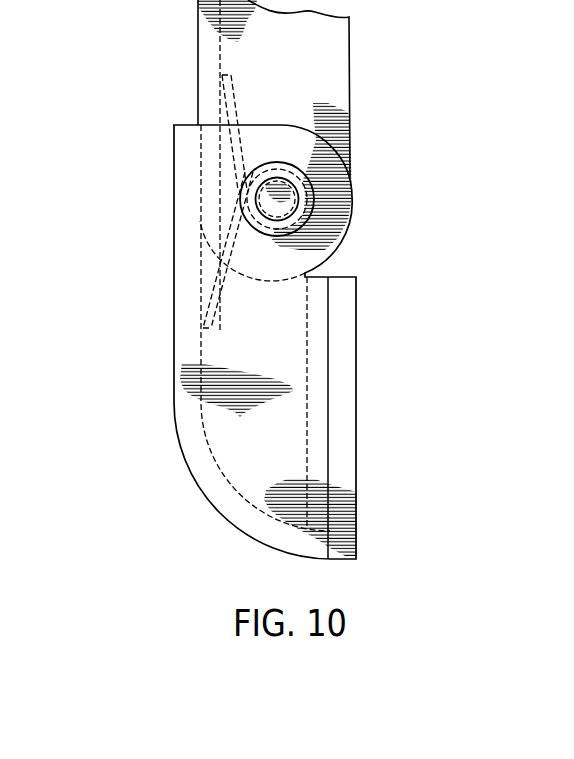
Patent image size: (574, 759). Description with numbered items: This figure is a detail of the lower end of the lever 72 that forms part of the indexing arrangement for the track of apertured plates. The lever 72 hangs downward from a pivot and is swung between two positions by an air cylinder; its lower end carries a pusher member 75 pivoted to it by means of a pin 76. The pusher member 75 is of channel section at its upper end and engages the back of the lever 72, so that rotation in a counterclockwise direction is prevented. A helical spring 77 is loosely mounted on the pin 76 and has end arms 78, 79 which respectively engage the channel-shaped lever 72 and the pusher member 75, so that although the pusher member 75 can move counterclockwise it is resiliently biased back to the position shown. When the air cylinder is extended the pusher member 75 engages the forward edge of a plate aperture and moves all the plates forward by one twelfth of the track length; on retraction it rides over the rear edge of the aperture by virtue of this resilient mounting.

The lever 72 is at (198, 33).
The pusher member 75 is at (230, 437).
The pin 76 is at (287, 201).
The helical spring 77 is at (320, 223).
The end arm 78 is at (235, 100).
The end arm 79 is at (218, 303).